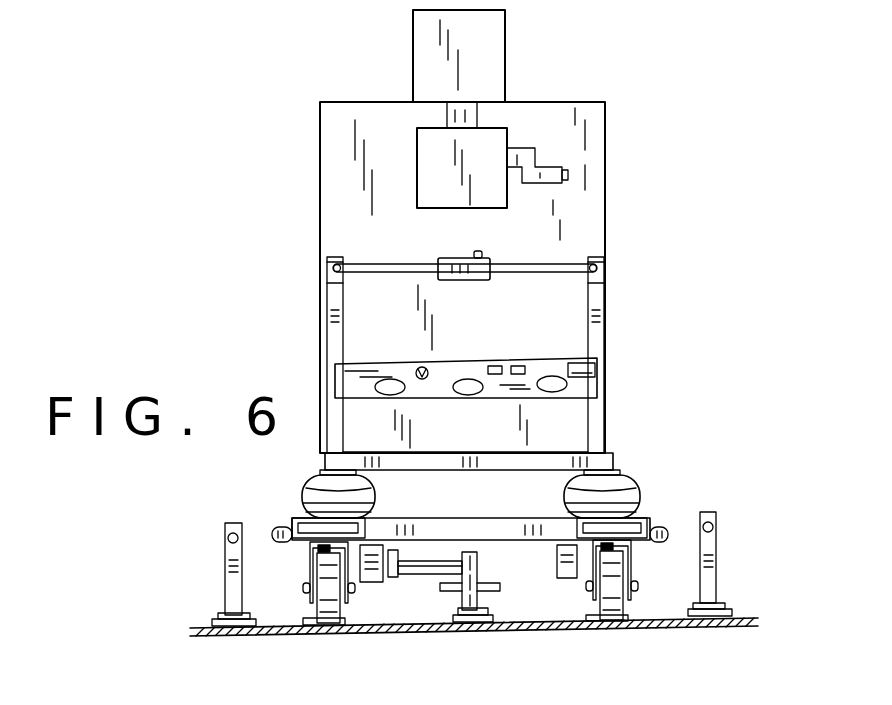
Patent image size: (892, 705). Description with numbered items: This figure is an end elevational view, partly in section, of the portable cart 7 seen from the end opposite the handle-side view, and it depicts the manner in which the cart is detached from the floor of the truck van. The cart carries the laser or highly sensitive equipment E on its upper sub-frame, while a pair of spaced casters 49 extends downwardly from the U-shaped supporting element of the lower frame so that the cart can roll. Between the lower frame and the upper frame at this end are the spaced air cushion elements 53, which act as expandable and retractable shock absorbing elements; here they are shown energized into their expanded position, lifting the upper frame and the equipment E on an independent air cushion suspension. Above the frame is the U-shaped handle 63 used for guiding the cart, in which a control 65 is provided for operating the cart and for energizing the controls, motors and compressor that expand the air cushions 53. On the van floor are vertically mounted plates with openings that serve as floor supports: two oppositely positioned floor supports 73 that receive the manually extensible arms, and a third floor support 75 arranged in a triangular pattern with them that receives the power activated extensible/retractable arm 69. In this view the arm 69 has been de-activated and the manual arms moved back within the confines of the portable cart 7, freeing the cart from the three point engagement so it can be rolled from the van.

The portable cart 7 is at (644, 340).
The highly sensitive equipment E is at (540, 229).
The U-shaped handle 63 is at (368, 268).
The control 65 is at (490, 259).
The air cushion element 53 is at (320, 498).
The caster 49 is at (330, 598).
The power activated extensible/retractable arm 69 is at (418, 572).
The floor support 75 is at (470, 596).
The floor support 73 is at (232, 587).